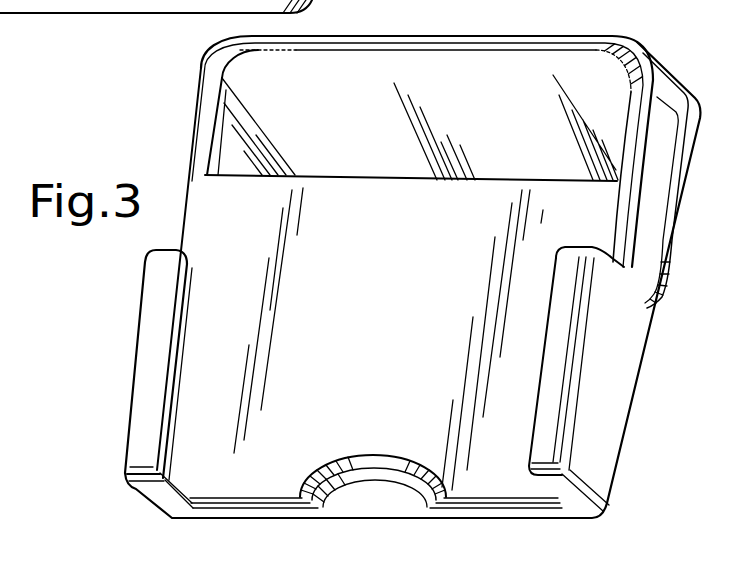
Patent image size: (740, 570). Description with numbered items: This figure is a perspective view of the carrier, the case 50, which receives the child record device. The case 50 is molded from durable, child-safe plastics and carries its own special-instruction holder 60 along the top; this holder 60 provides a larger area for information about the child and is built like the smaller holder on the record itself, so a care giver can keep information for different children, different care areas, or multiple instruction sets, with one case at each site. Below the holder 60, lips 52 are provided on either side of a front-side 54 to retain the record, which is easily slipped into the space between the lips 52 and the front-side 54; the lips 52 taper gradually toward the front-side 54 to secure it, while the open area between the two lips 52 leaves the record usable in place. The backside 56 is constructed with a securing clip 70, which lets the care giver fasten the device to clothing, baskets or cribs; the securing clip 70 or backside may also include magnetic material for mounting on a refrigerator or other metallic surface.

The case 50 is at (603, 385).
The lips 52 is at (146, 371).
The front-side 54 is at (325, 434).
The backside 56 is at (637, 368).
The holder 60 is at (586, 63).
The securing clip 70 is at (678, 176).